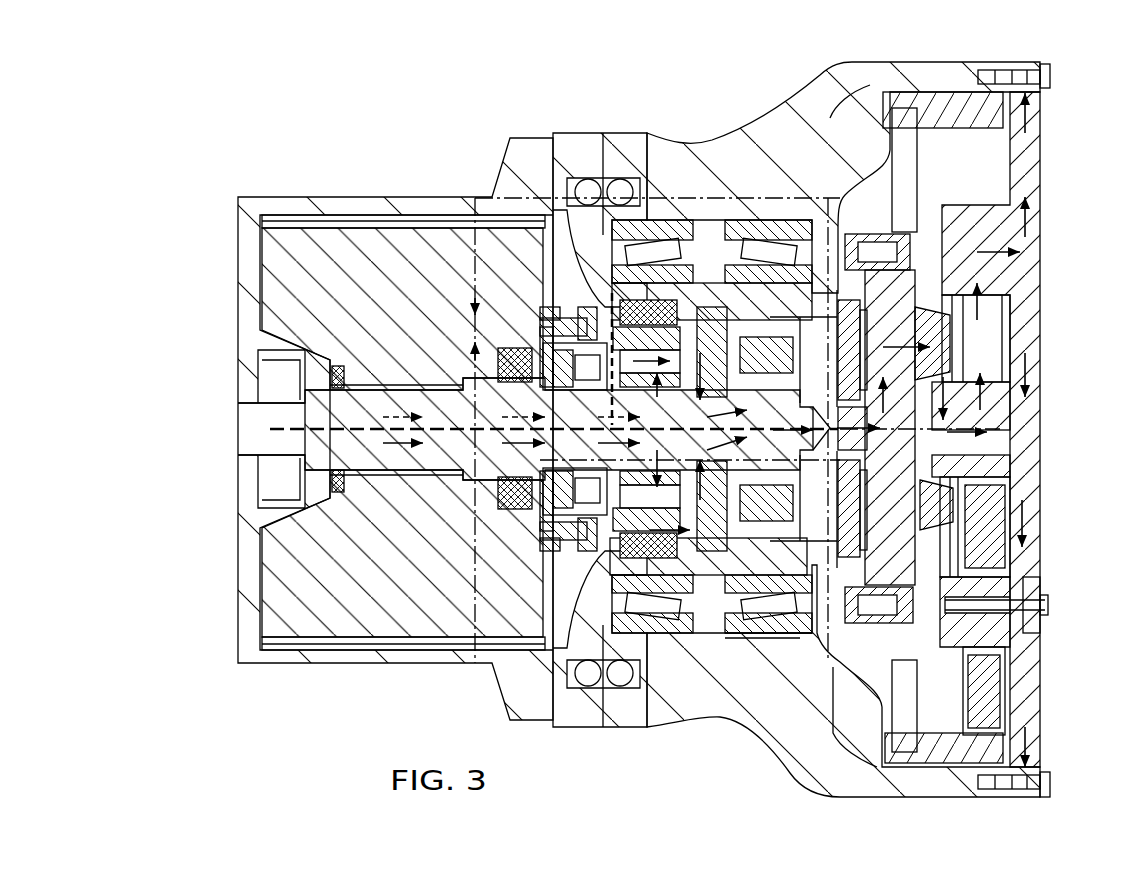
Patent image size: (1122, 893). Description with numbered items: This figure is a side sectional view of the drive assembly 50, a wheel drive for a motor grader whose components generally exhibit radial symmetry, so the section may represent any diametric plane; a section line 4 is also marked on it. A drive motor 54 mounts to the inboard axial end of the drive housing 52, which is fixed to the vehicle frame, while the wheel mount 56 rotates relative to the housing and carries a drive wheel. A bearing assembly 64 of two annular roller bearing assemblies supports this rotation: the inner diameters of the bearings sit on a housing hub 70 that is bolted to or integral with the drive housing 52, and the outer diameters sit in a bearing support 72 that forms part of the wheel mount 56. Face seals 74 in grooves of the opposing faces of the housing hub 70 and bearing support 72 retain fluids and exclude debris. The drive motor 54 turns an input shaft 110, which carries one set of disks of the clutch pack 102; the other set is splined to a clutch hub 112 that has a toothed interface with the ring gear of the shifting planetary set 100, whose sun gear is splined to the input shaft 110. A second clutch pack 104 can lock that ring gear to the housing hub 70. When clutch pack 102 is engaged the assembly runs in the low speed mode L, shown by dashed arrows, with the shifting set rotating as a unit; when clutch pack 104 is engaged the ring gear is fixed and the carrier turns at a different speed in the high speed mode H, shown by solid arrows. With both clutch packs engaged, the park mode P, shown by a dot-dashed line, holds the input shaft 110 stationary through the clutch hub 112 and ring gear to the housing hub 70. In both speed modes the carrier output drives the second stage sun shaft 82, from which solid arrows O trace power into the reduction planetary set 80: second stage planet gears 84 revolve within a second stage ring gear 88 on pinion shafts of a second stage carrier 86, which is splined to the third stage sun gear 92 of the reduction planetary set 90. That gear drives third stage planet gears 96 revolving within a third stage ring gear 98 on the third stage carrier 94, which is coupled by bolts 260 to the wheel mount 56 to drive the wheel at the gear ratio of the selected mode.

The drive assembly 50 is at (935, 50).
The drive housing 52 is at (573, 147).
The drive motor 54 is at (347, 197).
The wheel mount 56 is at (870, 60).
The bearing assembly 64 is at (760, 225).
The housing hub 70 is at (712, 563).
The bearing support 72 is at (763, 637).
The face seals 74 is at (577, 183).
The reduction planetary set 80 is at (908, 287).
The second stage sun shaft 82 is at (892, 450).
The second stage planet gears 84 is at (883, 517).
The second stage carrier 86 is at (928, 535).
The second stage ring gear 88 is at (892, 587).
The reduction planetary set 90 is at (993, 317).
The third stage sun gear 92 is at (990, 465).
The third stage carrier 94 is at (1007, 277).
The third stage planet gears 96 is at (980, 725).
The third stage ring gear 98 is at (957, 745).
The shifting planetary set 100 is at (643, 523).
The clutch pack 102 is at (513, 492).
The clutch pack 104 is at (640, 305).
The input shaft 110 is at (358, 440).
The clutch hub 112 is at (537, 510).
The bolts 260 is at (1050, 73).
The section line 4- 4 is at (459, 327).
The park mode P is at (303, 430).
The low speed mode L is at (402, 417).
The high speed mode H is at (393, 445).
The power flow arrows O is at (1025, 373).